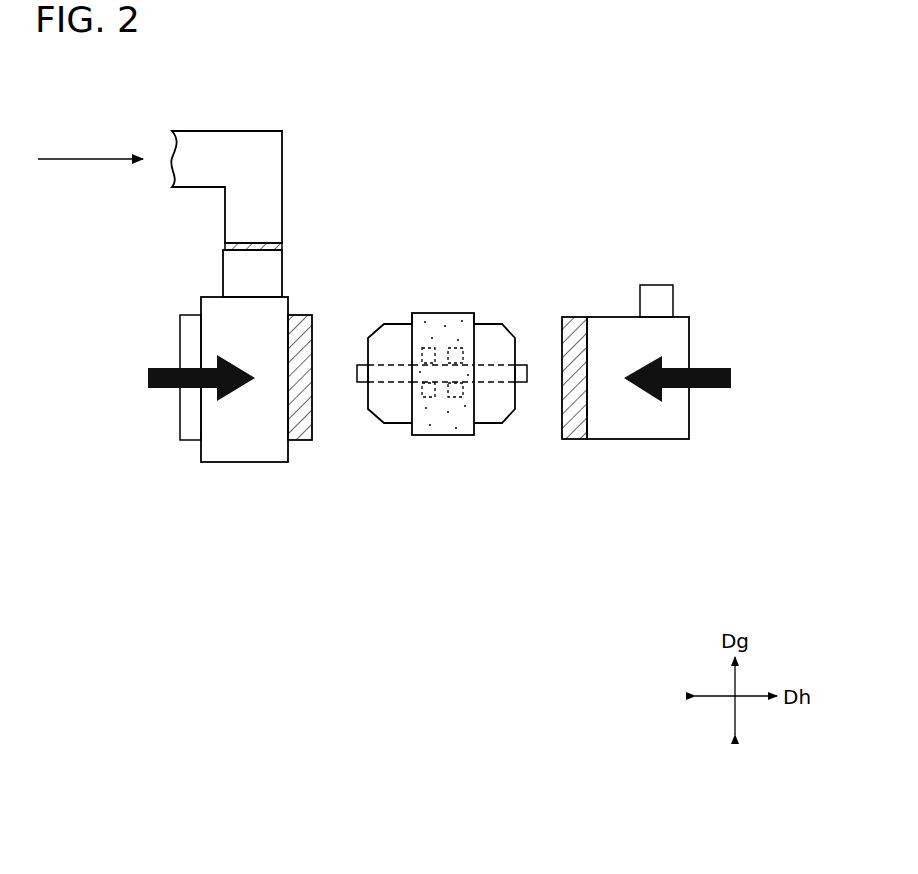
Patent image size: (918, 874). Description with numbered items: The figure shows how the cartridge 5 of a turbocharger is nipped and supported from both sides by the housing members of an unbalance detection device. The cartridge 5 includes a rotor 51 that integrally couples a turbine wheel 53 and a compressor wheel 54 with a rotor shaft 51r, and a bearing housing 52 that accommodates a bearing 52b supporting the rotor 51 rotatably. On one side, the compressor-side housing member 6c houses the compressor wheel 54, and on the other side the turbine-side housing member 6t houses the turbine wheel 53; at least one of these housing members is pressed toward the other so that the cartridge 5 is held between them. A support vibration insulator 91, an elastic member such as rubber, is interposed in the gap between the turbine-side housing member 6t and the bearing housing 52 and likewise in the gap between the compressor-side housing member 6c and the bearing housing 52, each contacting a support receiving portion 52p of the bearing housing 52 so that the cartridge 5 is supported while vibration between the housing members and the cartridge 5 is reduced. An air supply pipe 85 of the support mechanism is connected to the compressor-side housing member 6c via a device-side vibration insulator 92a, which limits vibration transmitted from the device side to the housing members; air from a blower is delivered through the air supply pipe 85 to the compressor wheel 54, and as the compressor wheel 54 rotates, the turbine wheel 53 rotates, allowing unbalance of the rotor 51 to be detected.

The cartridge 5 is at (537, 236).
The air supply pipe 85 is at (245, 131).
The device-side vibration insulator 92a is at (225, 247).
The compressor-side housing member 6c is at (248, 462).
The turbine-side housing member 6t is at (640, 439).
The support vibration insulator 91 is at (303, 440).
The rotor 51 is at (434, 448).
The rotor shaft 51r is at (359, 382).
The compressor wheel 54 is at (398, 423).
The turbine wheel 53 is at (475, 472).
The bearing housing 52 is at (444, 329).
The bearing 52b is at (421, 345).
The support receiving portion 52p is at (412, 313).